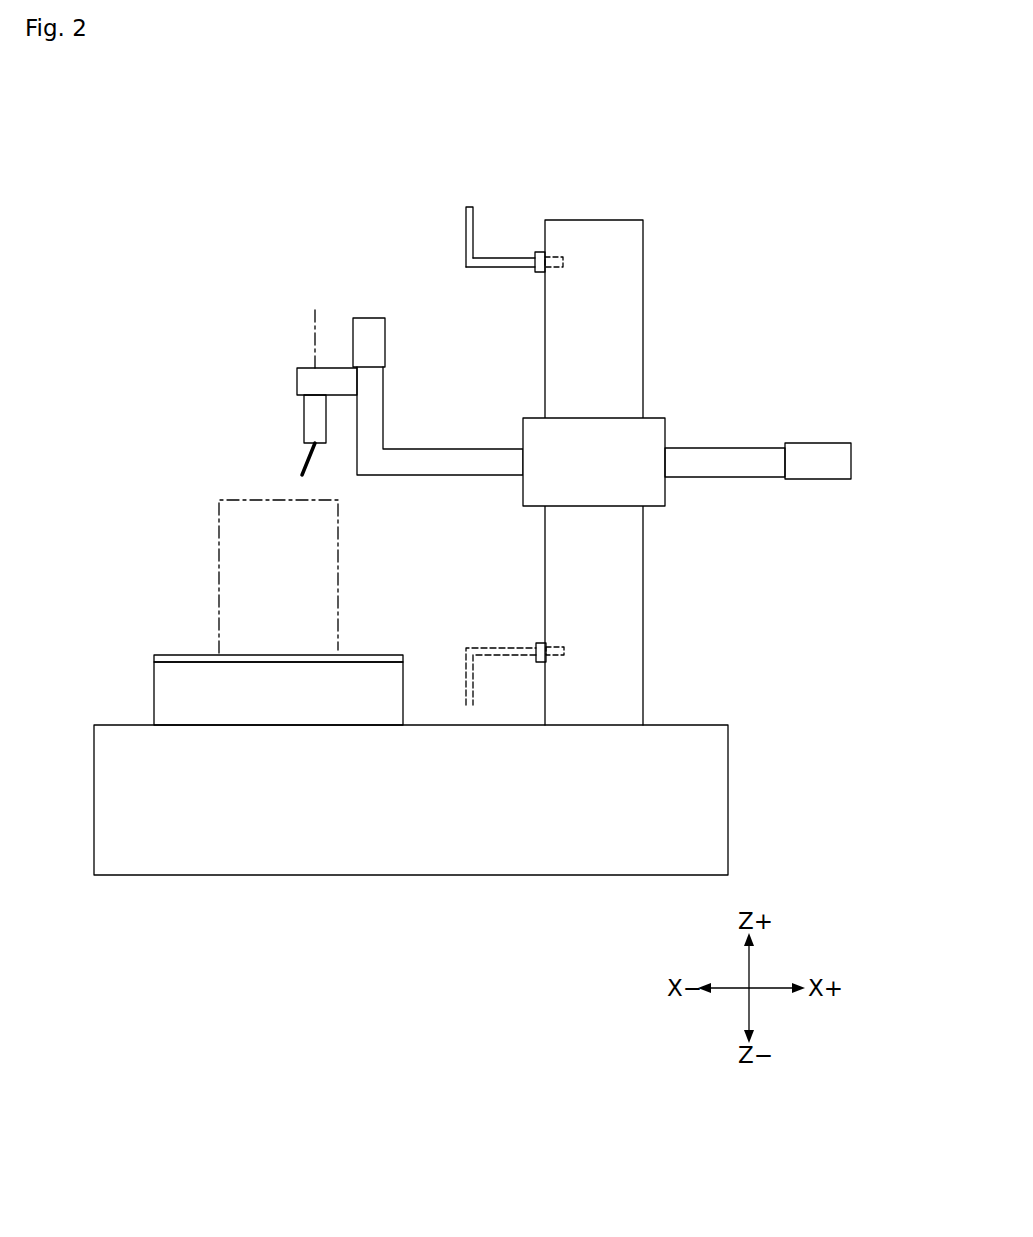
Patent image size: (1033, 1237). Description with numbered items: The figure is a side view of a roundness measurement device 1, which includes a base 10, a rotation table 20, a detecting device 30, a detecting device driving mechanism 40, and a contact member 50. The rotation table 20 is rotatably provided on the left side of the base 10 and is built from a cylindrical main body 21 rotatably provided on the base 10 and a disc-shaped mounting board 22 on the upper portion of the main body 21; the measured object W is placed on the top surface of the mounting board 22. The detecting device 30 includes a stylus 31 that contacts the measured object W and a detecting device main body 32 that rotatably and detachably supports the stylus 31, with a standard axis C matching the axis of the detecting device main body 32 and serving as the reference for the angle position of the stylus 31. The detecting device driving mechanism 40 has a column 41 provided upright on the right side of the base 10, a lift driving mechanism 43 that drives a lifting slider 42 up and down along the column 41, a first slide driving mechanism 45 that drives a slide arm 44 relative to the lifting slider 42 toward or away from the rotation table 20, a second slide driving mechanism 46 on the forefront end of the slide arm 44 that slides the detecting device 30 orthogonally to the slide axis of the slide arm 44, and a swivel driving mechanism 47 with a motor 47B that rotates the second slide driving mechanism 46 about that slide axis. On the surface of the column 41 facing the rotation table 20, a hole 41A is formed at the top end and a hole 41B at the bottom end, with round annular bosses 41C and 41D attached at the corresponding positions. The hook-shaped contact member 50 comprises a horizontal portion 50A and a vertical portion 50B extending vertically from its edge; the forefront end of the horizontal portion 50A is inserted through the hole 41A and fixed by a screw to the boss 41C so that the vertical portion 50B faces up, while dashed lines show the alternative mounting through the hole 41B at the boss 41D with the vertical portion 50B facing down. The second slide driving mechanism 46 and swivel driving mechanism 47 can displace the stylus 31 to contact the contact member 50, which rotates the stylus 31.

The roundness measurement device 1 is at (688, 114).
The base 10 is at (417, 865).
The rotation table 20 is at (283, 684).
The main body 21 is at (242, 707).
The mounting board 22 is at (180, 656).
The detecting device 30 is at (280, 378).
The stylus 31 is at (303, 452).
The detecting device main body 32 is at (303, 415).
The detecting device driving mechanism 40 is at (605, 138).
The column 41 is at (603, 442).
The hole 41A is at (552, 257).
The hole 41B is at (555, 644).
The boss 41C is at (540, 252).
The boss 41D is at (540, 643).
The lifting slider 42 is at (627, 451).
The lift driving mechanism 43 is at (612, 287).
The slide arm 44 is at (755, 452).
The first slide driving mechanism 45 is at (638, 483).
The second slide driving mechanism 46 is at (373, 318).
The swivel driving mechanism 47 is at (826, 435).
The motor 47B is at (822, 443).
The contact member 50 is at (466, 420).
The horizontal portion 50A is at (500, 268).
The vertical portion 50B is at (465, 243).
The measured object W is at (338, 557).
The standard axis C is at (314, 324).